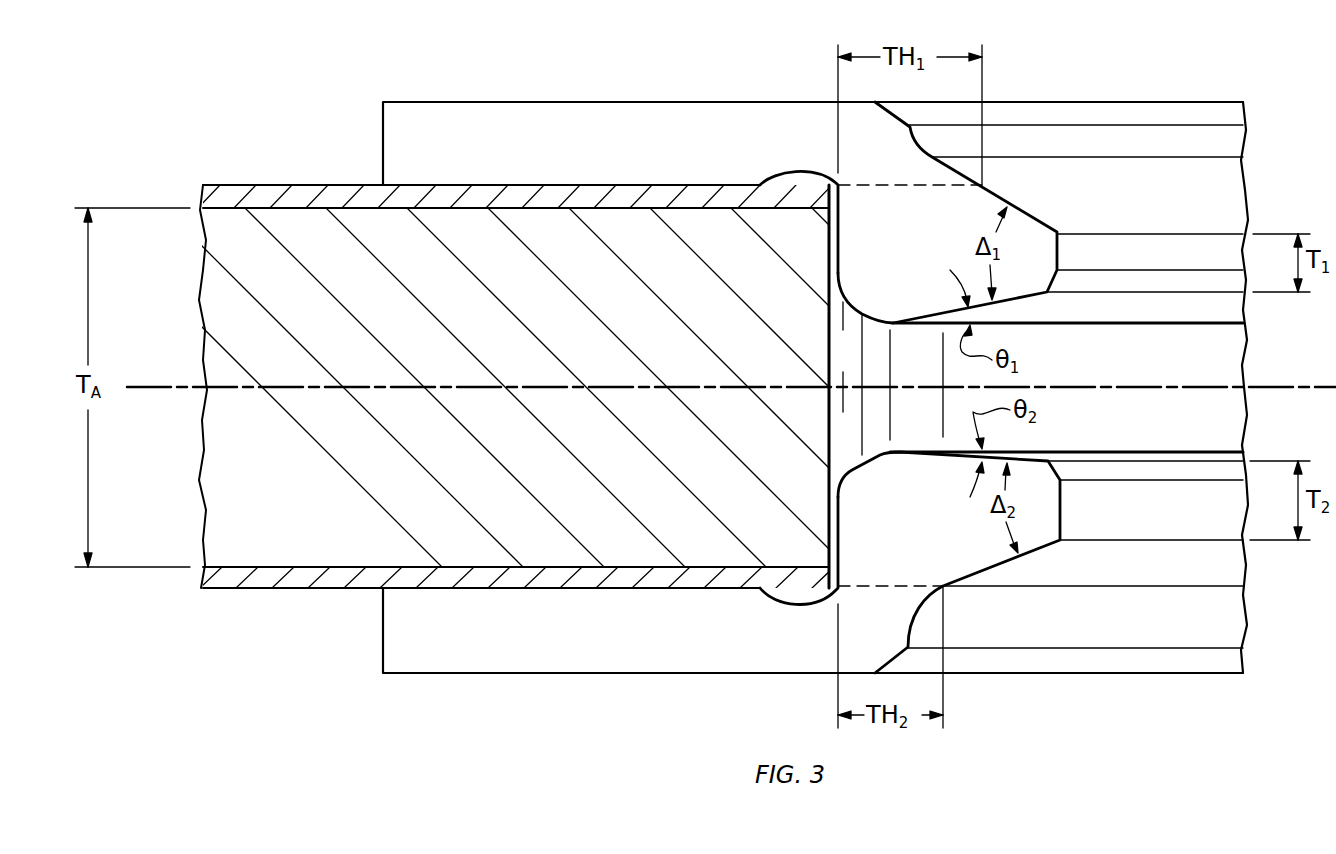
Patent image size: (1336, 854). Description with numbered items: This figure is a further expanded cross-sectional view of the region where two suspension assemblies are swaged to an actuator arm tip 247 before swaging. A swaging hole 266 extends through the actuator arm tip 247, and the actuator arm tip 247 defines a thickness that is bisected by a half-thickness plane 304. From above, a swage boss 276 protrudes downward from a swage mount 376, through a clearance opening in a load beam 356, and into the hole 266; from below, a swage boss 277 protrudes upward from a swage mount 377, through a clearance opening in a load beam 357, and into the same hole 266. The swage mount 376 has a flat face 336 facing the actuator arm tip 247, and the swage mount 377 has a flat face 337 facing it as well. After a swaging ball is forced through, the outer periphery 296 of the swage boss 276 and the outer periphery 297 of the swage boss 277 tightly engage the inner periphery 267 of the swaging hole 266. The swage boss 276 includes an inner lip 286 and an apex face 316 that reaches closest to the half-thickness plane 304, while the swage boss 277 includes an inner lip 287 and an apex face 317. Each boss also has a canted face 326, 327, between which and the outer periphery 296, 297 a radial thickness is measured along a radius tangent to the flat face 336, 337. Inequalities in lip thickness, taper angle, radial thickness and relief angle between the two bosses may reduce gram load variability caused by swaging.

The actuator arm tip 247 is at (223, 295).
The swaging hole 266 is at (822, 349).
The inner periphery of the swaging hole 267 is at (822, 428).
The swage boss 276 is at (882, 252).
The swage boss 277 is at (882, 525).
The first inner lip 286 is at (1140, 253).
The first inner lip 287 is at (1162, 522).
The outer periphery of the swage boss 296 is at (836, 258).
The outer periphery of the swage boss 297 is at (836, 515).
The half-thickness plane 304 is at (153, 385).
The apex face 316 is at (1123, 308).
The apex face 317 is at (1173, 455).
The canted face 326 is at (1222, 195).
The canted face 327 is at (1090, 565).
The flat face 336 is at (558, 207).
The flat face 337 is at (628, 580).
The load beam 356 is at (305, 193).
The load beam 357 is at (295, 582).
The swage mount 376 is at (460, 108).
The swage mount 377 is at (510, 667).